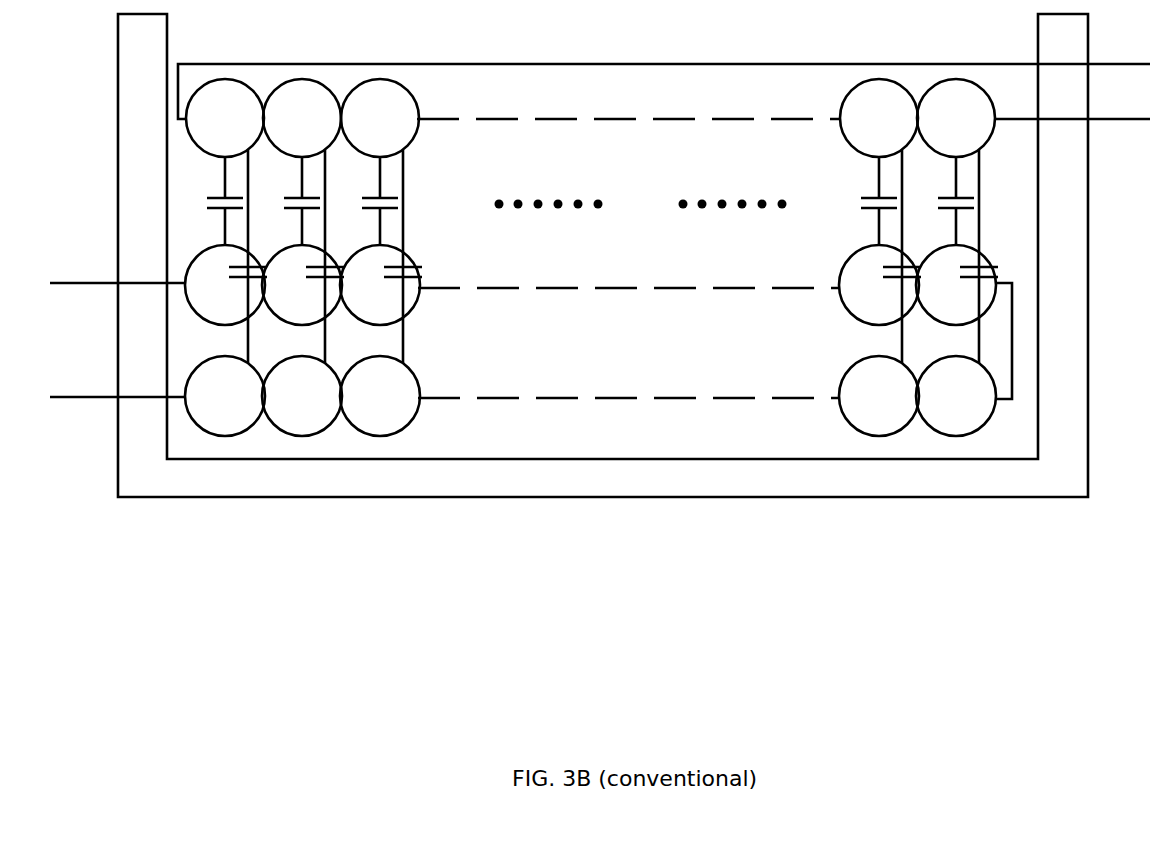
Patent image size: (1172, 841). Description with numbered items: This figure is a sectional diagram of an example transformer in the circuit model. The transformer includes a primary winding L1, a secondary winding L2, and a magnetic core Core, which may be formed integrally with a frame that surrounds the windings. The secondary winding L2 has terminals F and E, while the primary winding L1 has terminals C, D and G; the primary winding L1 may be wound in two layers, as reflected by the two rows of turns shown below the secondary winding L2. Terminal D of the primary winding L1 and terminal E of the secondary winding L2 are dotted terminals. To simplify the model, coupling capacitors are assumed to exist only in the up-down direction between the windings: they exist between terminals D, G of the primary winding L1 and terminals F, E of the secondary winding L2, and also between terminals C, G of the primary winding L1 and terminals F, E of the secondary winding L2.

The magnetic core Core is at (603, 255).
The terminal F of secondary winding L2 F is at (662, 110).
The terminal E of secondary winding L2 E is at (1072, 140).
The terminal C of primary winding L1 C is at (119, 268).
The terminal D of primary winding L1 D is at (122, 367).
The terminal G of primary winding L1 G is at (1008, 328).
The secondary winding L2 is at (629, 99).
The primary winding L1 is at (629, 343).